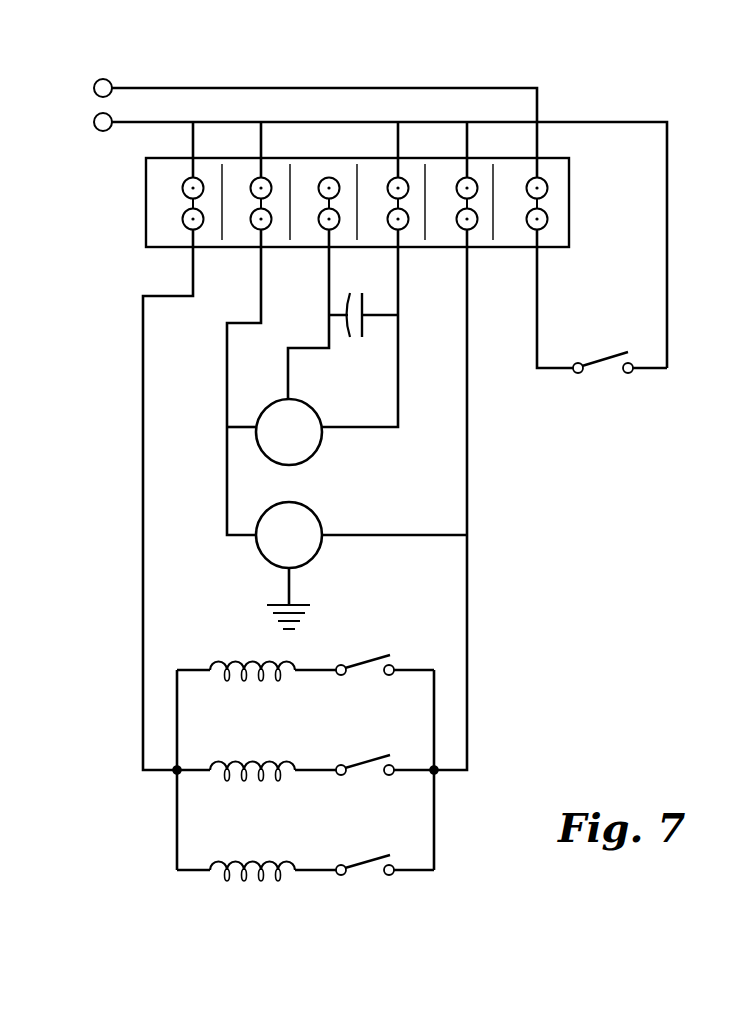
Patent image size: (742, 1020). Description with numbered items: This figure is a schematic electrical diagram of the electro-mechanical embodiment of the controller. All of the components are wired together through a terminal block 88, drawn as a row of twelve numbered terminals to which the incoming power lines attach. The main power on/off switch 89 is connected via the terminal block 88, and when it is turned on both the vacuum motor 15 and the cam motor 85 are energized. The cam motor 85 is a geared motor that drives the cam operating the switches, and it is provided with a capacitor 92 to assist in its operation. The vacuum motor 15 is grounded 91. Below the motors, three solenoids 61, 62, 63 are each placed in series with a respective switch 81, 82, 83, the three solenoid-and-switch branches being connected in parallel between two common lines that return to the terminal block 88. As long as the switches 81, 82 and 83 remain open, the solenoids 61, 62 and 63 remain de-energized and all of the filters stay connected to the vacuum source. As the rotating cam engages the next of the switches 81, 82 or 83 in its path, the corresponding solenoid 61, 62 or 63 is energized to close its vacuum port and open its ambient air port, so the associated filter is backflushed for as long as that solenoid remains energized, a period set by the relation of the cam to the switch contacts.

The terminal block 88 is at (146, 203).
The capacitor 92 is at (352, 340).
The cam motor 85 is at (315, 448).
The vacuum motor 15 is at (320, 517).
The ground 91 is at (287, 587).
The main power on/off switch 89 is at (602, 366).
The solenoid 61 is at (250, 676).
The solenoid 62 is at (250, 776).
The solenoid 63 is at (250, 876).
The switch 81 is at (368, 672).
The switch 82 is at (368, 772).
The switch 83 is at (368, 872).